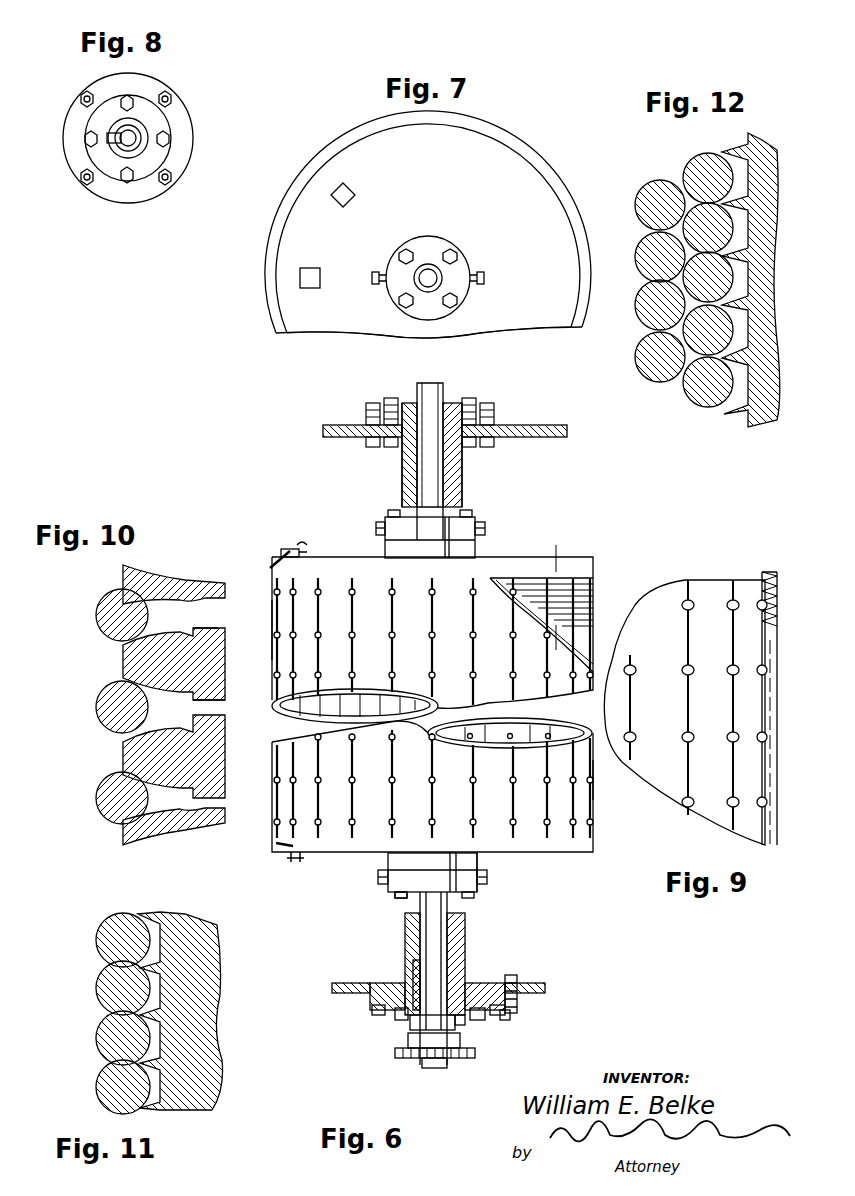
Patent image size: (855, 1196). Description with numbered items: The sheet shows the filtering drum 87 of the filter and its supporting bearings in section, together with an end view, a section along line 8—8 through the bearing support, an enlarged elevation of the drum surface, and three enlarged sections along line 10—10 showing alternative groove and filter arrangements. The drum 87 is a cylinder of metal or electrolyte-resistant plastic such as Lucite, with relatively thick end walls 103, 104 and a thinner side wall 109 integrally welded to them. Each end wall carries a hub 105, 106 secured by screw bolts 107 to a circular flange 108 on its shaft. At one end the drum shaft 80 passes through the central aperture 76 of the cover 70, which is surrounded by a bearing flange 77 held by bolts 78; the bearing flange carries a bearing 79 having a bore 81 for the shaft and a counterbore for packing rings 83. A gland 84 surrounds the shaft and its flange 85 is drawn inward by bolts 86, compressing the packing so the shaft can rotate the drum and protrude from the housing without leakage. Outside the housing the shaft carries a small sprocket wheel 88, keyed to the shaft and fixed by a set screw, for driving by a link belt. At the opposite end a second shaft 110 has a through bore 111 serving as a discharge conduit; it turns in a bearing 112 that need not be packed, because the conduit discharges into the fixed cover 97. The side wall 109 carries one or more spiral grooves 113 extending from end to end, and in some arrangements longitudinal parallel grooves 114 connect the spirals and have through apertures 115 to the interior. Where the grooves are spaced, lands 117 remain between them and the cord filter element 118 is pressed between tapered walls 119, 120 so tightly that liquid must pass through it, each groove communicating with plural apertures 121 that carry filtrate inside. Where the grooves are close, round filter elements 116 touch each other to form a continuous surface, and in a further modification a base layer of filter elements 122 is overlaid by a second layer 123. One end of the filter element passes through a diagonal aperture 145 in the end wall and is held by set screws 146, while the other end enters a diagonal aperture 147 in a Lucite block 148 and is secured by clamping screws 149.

In FIG. 6, the section line 8 is at (330, 422).
In FIG. 6, the section line 10 is at (402, 569).
In FIG. 6, the cover 70 is at (345, 983).
In FIG. 6, the central aperture 76 is at (468, 982).
In FIG. 6, the bearing flange 77 is at (509, 983).
In FIG. 6, the bolts 78 is at (380, 984).
In FIG. 6, the bearing 79 is at (465, 935).
In FIG. 6, the drum shaft 80 is at (422, 910).
In FIG. 6, the bore 81 is at (420, 940).
In FIG. 6, the packing rings 83 is at (412, 970).
In FIG. 6, the gland 84 is at (455, 1022).
In FIG. 6, the flange 85 is at (510, 1014).
In FIG. 6, the bolts 86 is at (465, 1020).
In FIG. 9, the drum 87 is at (612, 762).
In FIG. 6, the drum 87 is at (584, 776).
In FIG. 6, the sprocket wheel 88 is at (408, 1060).
In FIG. 7, the fixed cover 97 is at (552, 216).
In FIG. 12, the end wall 103 is at (762, 420).
In FIG. 10, the end wall 103 is at (160, 845).
In FIG. 11, the end wall 103 is at (187, 925).
In FIG. 9, the end wall 103 is at (706, 580).
In FIG. 6, the end wall 103 is at (532, 556).
In FIG. 6, the end wall 104 is at (573, 852).
In FIG. 6, the hub 105 is at (477, 553).
In FIG. 6, the hub 106 is at (478, 862).
In FIG. 6, the screw bolts 107 is at (397, 895).
In FIG. 7, the circular flange 108 is at (464, 261).
In FIG. 6, the circular flange 108 is at (400, 877).
In FIG. 6, the side wall 109 is at (272, 622).
In FIG. 6, the second shaft 110 is at (462, 469).
In FIG. 6, the through bore 111 is at (422, 477).
In FIG. 8, the bearing 112 is at (156, 121).
In FIG. 6, the bearing 112 is at (456, 401).
In FIG. 10, the spiral grooves 113 is at (178, 598).
In FIG. 6, the spiral grooves 113 is at (566, 584).
In FIG. 6, the parallel grooves 114 is at (352, 614).
In FIG. 6, the through apertures 115 is at (352, 634).
In FIG. 11, the round filter elements 116 is at (113, 916).
In FIG. 10, the lands 117 is at (122, 665).
In FIG. 10, the filter element 118 is at (108, 603).
In FIG. 10, the tapered wall 119 is at (117, 597).
In FIG. 10, the tapered wall 120 is at (117, 625).
In FIG. 10, the apertures 121 is at (212, 596).
In FIG. 12, the base layer of filter elements 122 is at (703, 407).
In FIG. 12, the second layer of filter elements 123 is at (655, 380).
In FIG. 6, the diagonal aperture 145 is at (276, 843).
In FIG. 6, the set screws 146 is at (300, 862).
In FIG. 6, the diagonal aperture 147 is at (280, 557).
In FIG. 6, the Lucite block 148 is at (290, 549).
In FIG. 6, the clamping screws 149 is at (301, 550).